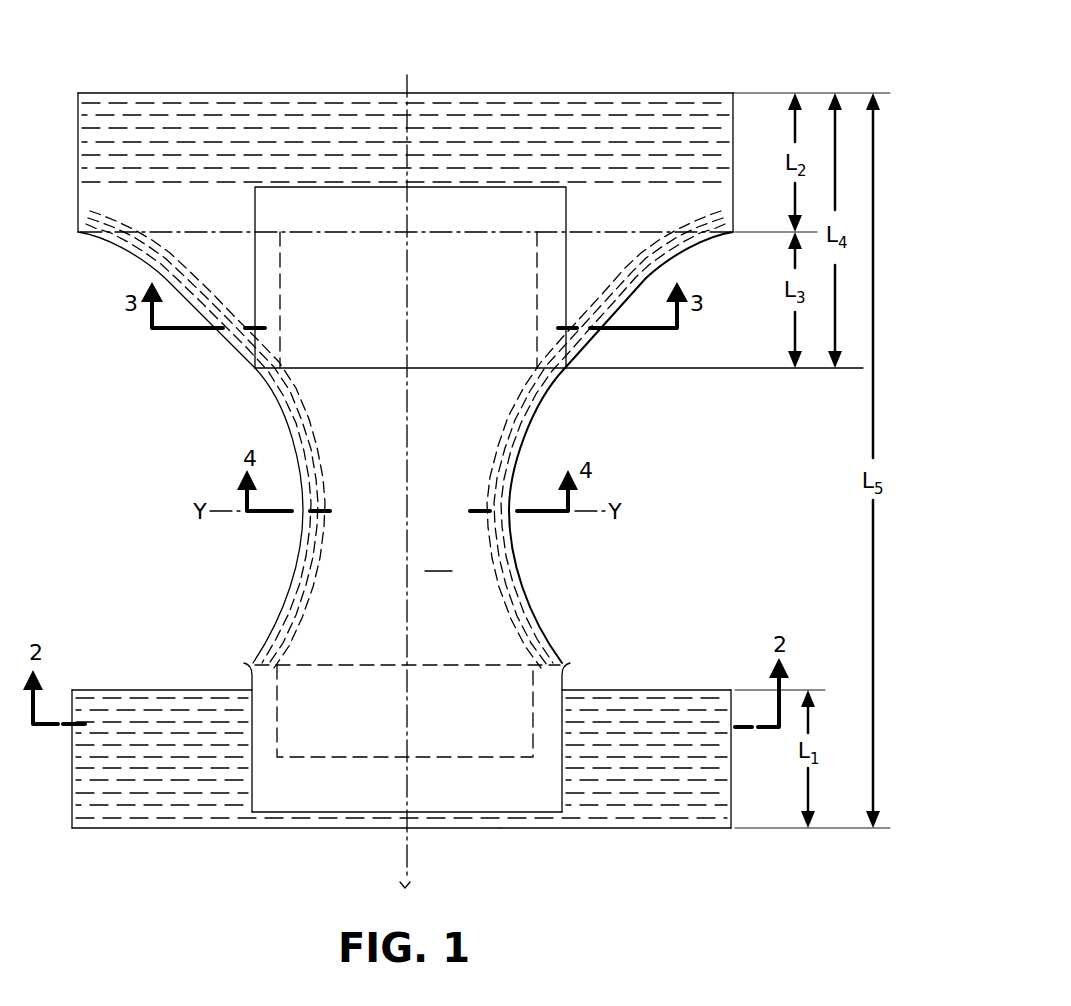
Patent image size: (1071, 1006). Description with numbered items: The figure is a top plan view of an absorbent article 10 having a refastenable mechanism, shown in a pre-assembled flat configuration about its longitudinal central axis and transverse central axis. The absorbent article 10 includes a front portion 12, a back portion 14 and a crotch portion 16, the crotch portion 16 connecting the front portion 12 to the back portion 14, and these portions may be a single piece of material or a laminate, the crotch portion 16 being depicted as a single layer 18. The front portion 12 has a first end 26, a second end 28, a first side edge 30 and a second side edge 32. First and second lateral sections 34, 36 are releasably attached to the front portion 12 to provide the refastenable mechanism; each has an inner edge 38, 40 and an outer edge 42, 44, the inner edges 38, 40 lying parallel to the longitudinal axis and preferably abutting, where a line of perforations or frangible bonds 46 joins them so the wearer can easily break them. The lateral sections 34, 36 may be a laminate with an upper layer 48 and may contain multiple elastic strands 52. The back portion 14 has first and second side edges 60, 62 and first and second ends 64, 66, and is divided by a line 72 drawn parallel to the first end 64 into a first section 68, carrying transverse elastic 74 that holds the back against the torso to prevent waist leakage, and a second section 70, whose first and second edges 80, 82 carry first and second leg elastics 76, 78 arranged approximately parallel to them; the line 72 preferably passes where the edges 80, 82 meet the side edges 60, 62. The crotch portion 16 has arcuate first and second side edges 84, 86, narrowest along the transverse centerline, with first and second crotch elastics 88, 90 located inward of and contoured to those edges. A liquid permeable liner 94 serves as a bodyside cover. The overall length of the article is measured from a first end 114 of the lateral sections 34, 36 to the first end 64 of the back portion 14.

The absorbent article 10 is at (770, 31).
The front portion 12 is at (633, 668).
The back portion 14 is at (742, 108).
The crotch portion 16 is at (572, 420).
The single layer 18 is at (707, 832).
The first end 26 is at (484, 812).
The second end 28 is at (431, 665).
The first side edge 30 is at (248, 673).
The second side edge 32 is at (564, 673).
The first lateral section 34 is at (177, 698).
The second lateral section 36 is at (673, 700).
The inner edge 38 is at (396, 815).
The inner edge 40 is at (406, 830).
The outer edge 42 is at (72, 753).
The outer edge 44 is at (732, 763).
The perforations 46 is at (390, 800).
The upper layer 48 is at (710, 790).
The elastic strands 52 is at (637, 812).
The first side edge 60 is at (78, 153).
The second side edge 62 is at (733, 152).
The first end 64 is at (477, 93).
The second end 66 is at (457, 370).
The first section 68 is at (659, 108).
The second section 70 is at (663, 262).
The line 72 is at (597, 230).
The elastic 74 is at (572, 117).
The first leg elastic 76 is at (160, 270).
The second leg elastic 78 is at (702, 248).
The first edge 80 is at (228, 343).
The second edge 82 is at (596, 342).
The first side edge 84 is at (300, 541).
The second side edge 86 is at (513, 549).
The first crotch elastic 88 is at (291, 431).
The second crotch elastic 90 is at (515, 456).
The liquid permeable liner 94 is at (438, 558).
The first end 114 is at (515, 830).